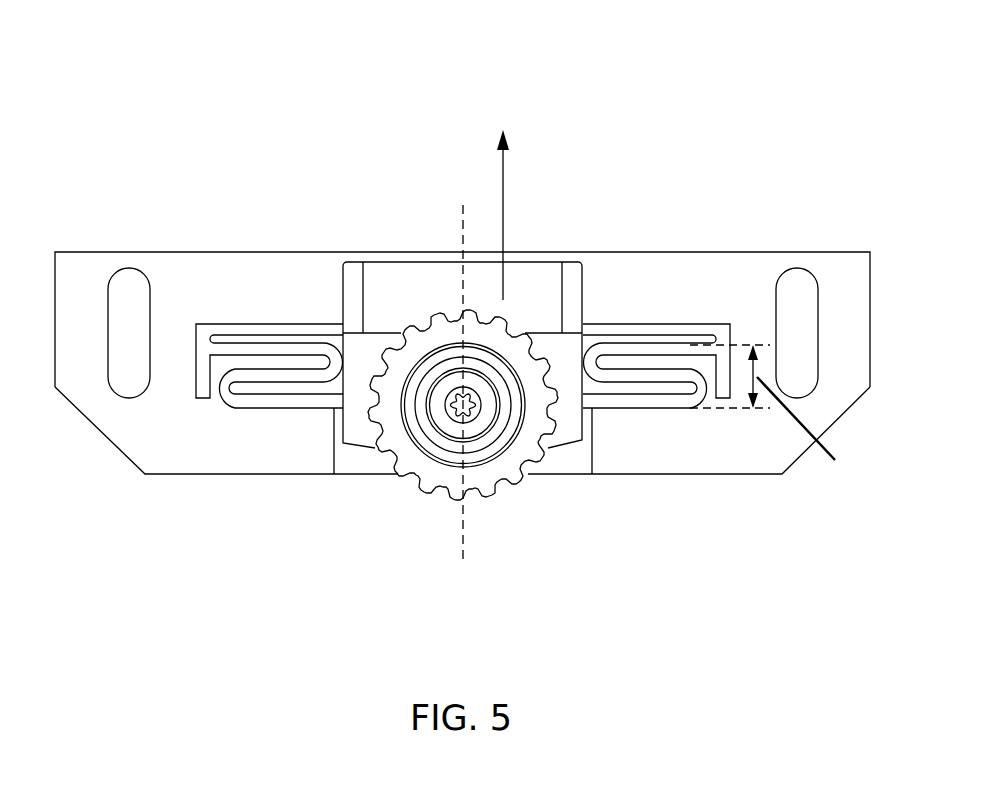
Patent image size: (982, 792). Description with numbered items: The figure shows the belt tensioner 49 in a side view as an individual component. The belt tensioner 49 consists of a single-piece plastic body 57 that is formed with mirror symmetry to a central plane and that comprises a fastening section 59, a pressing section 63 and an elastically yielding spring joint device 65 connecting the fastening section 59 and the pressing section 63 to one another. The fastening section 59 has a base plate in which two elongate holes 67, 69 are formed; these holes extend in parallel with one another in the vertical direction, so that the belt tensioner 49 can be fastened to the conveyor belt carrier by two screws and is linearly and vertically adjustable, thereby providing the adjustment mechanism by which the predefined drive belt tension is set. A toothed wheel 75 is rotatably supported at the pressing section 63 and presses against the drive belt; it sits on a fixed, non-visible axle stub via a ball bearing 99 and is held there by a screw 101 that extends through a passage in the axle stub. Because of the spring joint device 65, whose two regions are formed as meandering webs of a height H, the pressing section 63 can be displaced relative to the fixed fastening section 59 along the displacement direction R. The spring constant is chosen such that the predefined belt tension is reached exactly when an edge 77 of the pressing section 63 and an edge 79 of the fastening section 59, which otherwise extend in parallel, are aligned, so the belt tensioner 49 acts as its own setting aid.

The belt tensioner 49 is at (179, 206).
The plastic body 57 is at (690, 179).
The fastening section 59 is at (723, 255).
The pressing section 63 is at (424, 270).
The spring joint device 65 is at (180, 442).
The elongate hole 67 is at (130, 308).
The elongate hole 69 is at (798, 313).
The toothed wheel 75 is at (533, 420).
The edge of the pressing section 77 is at (548, 332).
The edge of the fastening section 79 is at (292, 325).
The ball bearing 99 is at (485, 440).
The screw 101 is at (443, 420).